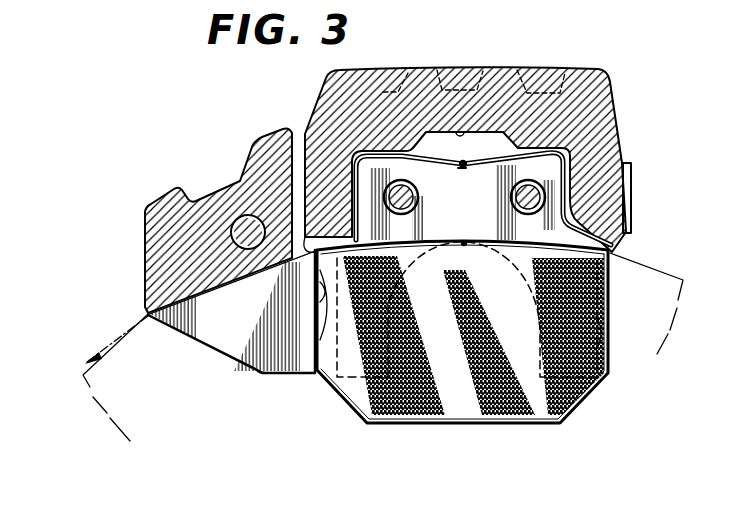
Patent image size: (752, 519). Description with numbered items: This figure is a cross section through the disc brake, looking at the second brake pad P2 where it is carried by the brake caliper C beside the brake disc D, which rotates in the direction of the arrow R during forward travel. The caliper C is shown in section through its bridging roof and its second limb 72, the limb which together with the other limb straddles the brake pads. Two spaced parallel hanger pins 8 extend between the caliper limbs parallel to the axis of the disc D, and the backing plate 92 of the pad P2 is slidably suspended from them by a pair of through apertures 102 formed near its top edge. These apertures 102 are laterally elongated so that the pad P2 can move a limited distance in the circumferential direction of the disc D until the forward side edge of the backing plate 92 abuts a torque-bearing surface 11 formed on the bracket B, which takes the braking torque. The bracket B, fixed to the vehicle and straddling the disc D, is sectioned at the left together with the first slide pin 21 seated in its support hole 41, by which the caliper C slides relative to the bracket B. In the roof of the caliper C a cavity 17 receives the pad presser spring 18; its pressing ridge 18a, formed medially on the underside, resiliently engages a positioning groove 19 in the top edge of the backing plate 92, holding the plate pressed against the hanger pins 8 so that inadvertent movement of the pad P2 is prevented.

The bracket B is at (152, 232).
The brake caliper C is at (586, 71).
The brake disc D is at (632, 259).
The direction of rotation arrow R is at (110, 343).
The second brake pad P2 is at (470, 343).
The second limb 72 is at (344, 383).
The backing plate 92 is at (463, 245).
The through apertures 102 is at (413, 200).
The hanger pins 8 is at (462, 204).
The cavity 17 is at (463, 130).
The pad presser spring 18 is at (427, 156).
The pressing ridge 18a is at (462, 170).
The positioning grooves 19 is at (466, 162).
The support hole 41 is at (254, 217).
The first slide pin 21 is at (256, 254).
The torque-bearing surface 11 is at (322, 291).